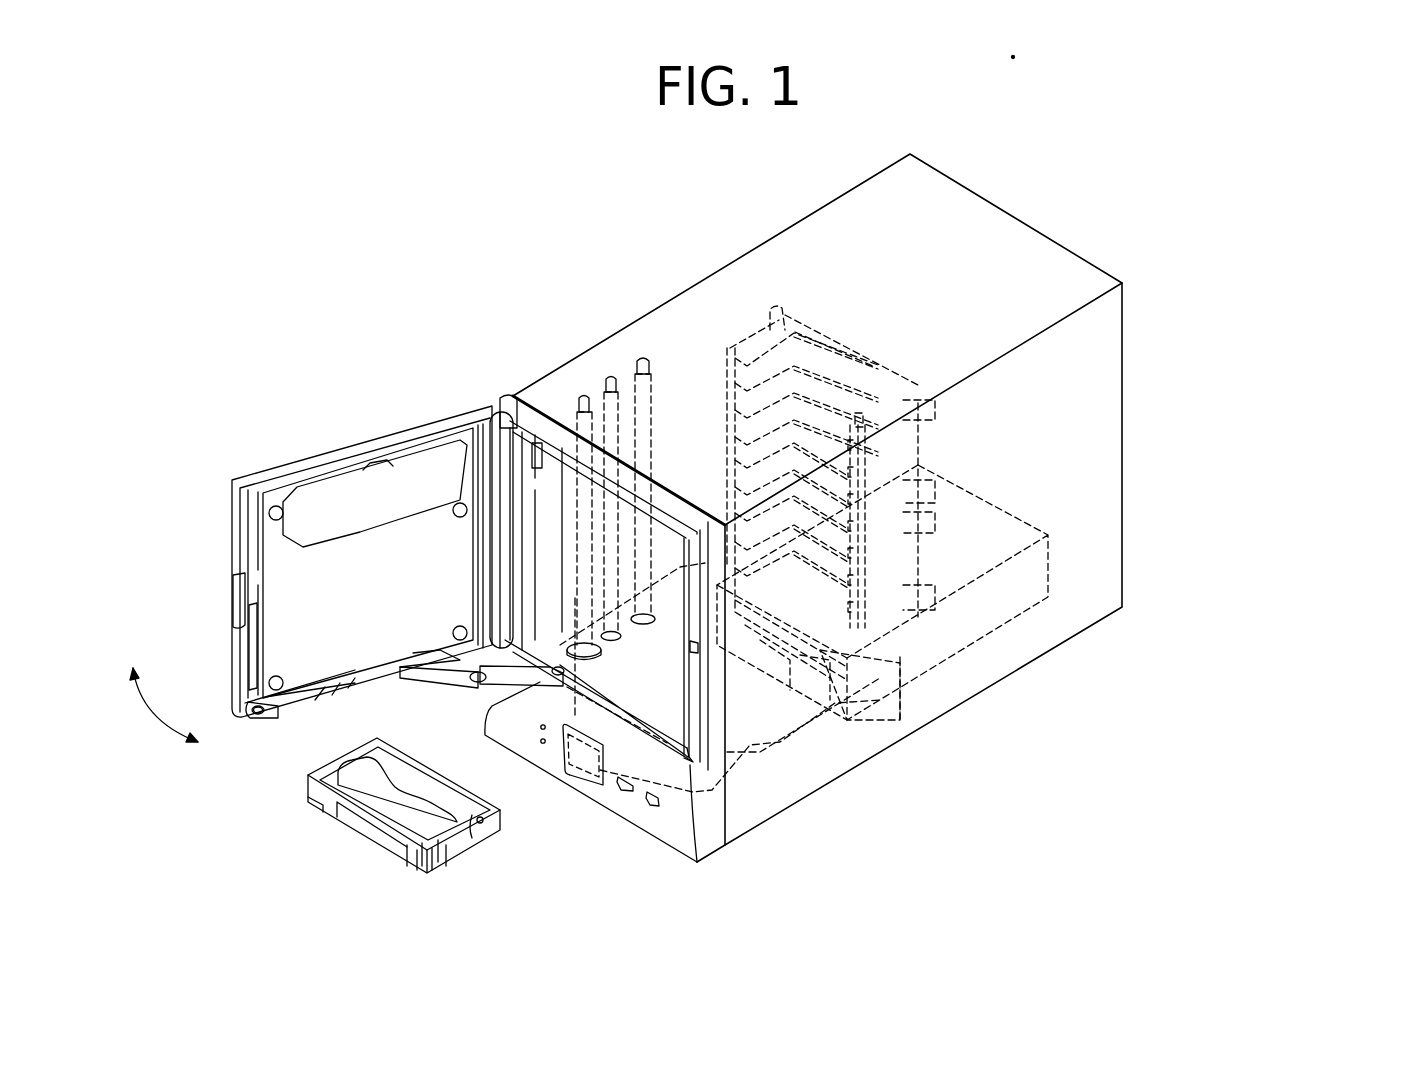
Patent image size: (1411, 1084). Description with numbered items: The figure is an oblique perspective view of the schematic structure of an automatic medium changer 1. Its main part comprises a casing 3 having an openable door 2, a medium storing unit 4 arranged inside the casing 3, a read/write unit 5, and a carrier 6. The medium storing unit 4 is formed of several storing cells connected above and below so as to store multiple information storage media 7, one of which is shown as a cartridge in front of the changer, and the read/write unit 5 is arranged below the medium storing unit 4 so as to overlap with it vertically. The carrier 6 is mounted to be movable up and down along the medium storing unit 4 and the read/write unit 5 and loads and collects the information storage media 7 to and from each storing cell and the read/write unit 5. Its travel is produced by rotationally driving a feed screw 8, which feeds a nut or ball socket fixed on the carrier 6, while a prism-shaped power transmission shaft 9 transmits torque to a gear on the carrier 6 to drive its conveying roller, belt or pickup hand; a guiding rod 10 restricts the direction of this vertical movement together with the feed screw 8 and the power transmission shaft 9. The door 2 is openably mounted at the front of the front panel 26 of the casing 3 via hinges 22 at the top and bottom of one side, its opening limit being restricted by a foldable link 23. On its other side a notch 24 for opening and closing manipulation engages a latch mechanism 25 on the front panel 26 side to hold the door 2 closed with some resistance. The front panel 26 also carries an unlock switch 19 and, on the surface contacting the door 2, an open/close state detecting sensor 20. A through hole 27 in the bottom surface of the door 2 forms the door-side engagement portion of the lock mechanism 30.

The automatic medium changer 1 is at (675, 258).
The door 2 is at (328, 434).
The casing 3 is at (1100, 444).
The medium storing unit 4 is at (905, 447).
The read/write unit 5 is at (1000, 608).
The carrier 6 is at (830, 713).
The information storage medium 7 is at (363, 827).
The feed screw 8 is at (577, 398).
The power transmission shaft 9 is at (638, 360).
The guiding rod 10 is at (604, 378).
The unlock switch 19 is at (649, 806).
The open/close state detecting sensor 20 is at (645, 732).
The hinge 22 is at (490, 408).
The foldable link 23 is at (442, 673).
The notch 24 is at (237, 602).
The latch mechanism 25 is at (705, 652).
The front panel 26 is at (545, 757).
The through hole 27 is at (283, 715).
The lock mechanism 30 is at (158, 781).